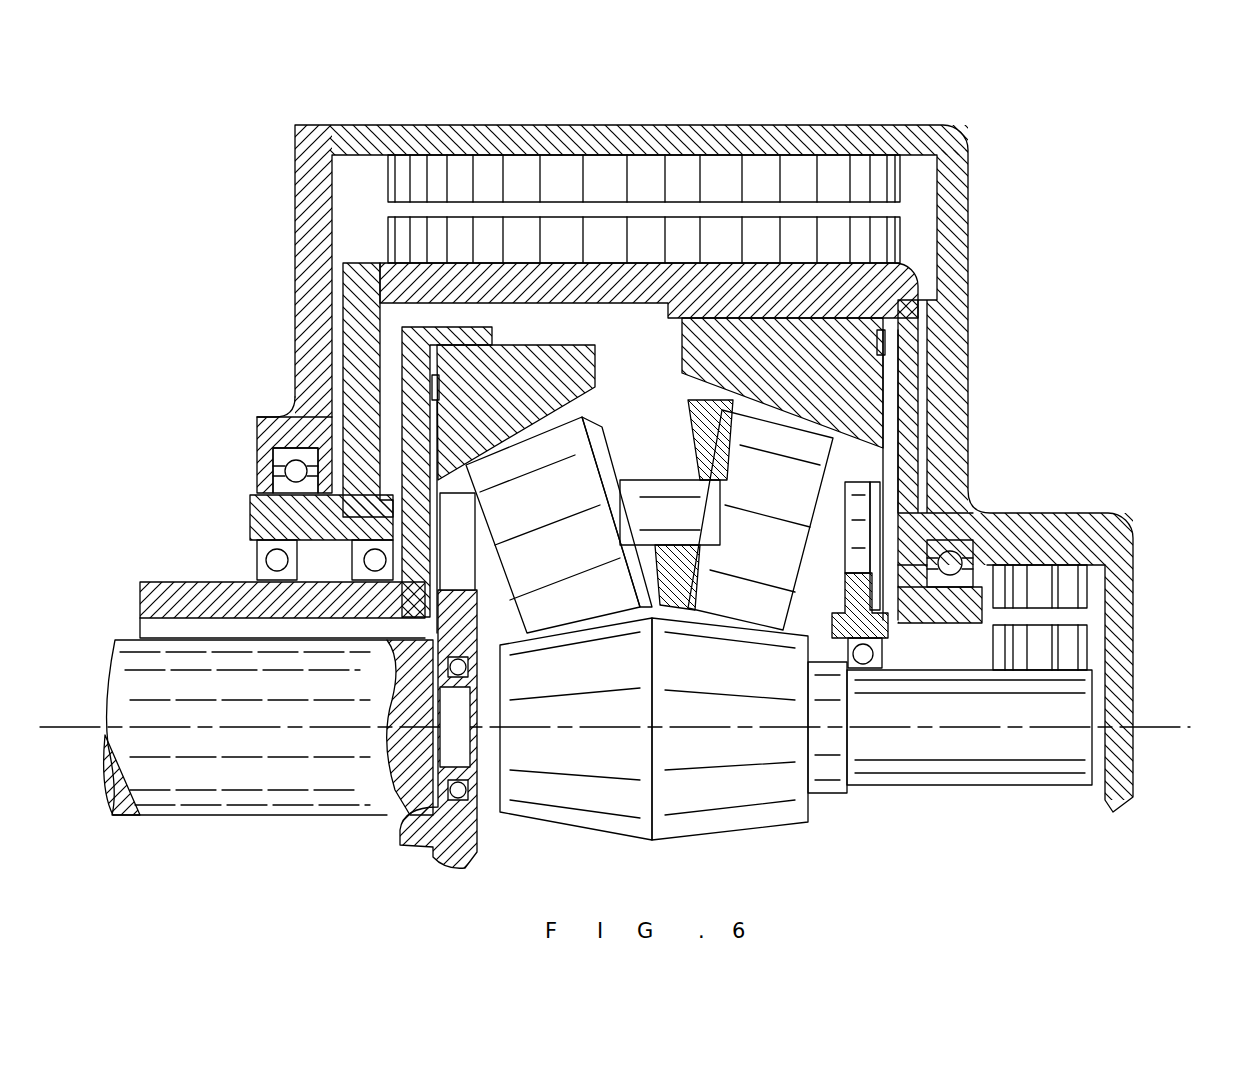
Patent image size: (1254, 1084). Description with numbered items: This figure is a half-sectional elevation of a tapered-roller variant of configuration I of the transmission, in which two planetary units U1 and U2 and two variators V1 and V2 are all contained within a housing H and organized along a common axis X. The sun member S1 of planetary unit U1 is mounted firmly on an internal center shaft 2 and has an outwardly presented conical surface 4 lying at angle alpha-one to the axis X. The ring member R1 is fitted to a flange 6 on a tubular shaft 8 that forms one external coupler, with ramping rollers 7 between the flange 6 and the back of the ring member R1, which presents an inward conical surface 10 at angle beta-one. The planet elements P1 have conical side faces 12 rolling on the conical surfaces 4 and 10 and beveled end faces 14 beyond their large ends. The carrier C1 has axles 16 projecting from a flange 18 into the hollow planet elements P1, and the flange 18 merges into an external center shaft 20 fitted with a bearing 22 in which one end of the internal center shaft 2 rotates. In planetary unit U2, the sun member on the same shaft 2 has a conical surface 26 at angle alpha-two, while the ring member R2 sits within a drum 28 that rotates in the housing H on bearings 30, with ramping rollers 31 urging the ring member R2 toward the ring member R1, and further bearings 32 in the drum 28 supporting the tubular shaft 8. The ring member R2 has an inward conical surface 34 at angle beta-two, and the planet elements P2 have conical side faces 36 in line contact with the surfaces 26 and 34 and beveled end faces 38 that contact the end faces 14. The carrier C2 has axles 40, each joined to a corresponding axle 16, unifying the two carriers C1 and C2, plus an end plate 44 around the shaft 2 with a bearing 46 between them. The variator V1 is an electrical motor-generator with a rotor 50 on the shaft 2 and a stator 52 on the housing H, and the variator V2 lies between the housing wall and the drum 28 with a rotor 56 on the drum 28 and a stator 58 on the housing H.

The internal center shaft 2 is at (895, 775).
The conical surface 4 is at (616, 800).
The flange 6 is at (405, 365).
The ramping rollers 7 is at (430, 388).
The tubular shaft 8 is at (160, 580).
The conical surface 10 is at (595, 395).
The conical side faces 12 is at (553, 525).
The beveled end face 14 is at (605, 452).
The axles 16 is at (483, 560).
The flange 18 is at (450, 840).
The external center shaft 20 is at (215, 815).
The bearing 22 is at (385, 790).
The conical surface 26 is at (710, 800).
The drum 28 is at (915, 283).
The bearings 30 is at (275, 468).
The ramping rollers 31 is at (885, 332).
The bearings 32 is at (345, 528).
The conical surface 34 is at (680, 374).
The conical side faces 36 is at (760, 520).
The beveled end face 38 is at (705, 410).
The axles 40 is at (833, 540).
The end plate 44 is at (878, 505).
The bearing 46 is at (882, 654).
The rotor 50 is at (1085, 652).
The stator 52 is at (764, 810).
The rotor 56 is at (900, 238).
The stator 58 is at (900, 180).
The housing H is at (292, 217).
The configuration I is at (1084, 267).
The axis X is at (615, 733).
The variator V1 is at (1080, 617).
The variator V2 is at (372, 180).
The planet elements P1 is at (412, 420).
The planet elements P2 is at (878, 410).
The carrier C1 is at (400, 470).
The carrier C2 is at (855, 450).
The ring member R1 is at (520, 345).
The ring member R2 is at (840, 378).
The sun member S1 is at (580, 830).
The planetary unit U1 is at (511, 832).
The planetary unit U2 is at (807, 836).